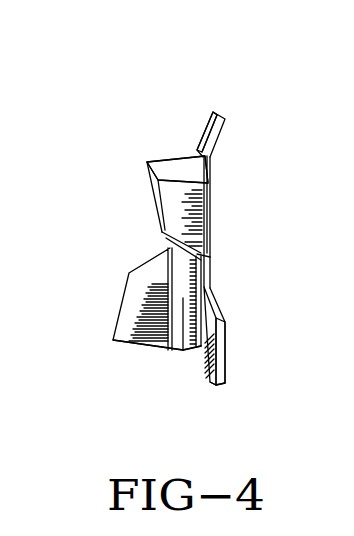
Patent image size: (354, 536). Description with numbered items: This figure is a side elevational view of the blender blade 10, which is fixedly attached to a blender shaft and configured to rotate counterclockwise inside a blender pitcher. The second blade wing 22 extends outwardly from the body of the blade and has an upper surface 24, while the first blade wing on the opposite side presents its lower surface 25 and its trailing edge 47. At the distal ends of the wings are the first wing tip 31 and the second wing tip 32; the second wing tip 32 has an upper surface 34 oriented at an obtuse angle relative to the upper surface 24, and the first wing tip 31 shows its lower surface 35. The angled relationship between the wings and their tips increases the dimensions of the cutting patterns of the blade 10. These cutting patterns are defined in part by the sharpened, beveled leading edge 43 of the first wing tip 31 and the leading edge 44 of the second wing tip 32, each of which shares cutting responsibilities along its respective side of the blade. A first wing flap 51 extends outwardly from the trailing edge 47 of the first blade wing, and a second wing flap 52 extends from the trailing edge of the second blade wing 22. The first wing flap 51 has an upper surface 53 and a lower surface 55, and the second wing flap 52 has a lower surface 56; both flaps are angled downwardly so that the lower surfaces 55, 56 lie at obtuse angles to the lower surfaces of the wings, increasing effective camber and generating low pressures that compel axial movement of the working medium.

The blender blade 10 is at (96, 146).
The leading edge of first wing tip 43 is at (165, 160).
The first wing tip 31 is at (147, 185).
The lower surface of first wing tip 35 is at (172, 204).
The lower surface of first blade wing 25 is at (210, 204).
The second wing flap 52 is at (231, 106).
The lower surface of second wing flap 56 is at (218, 143).
The trailing edge of first blade wing 47 is at (207, 272).
The second blade wing 22 is at (181, 304).
The upper surface of second wing tip 34 is at (128, 291).
The second wing tip 32 is at (125, 318).
The leading edge of second wing tip 44 is at (130, 348).
The upper surface of second blade wing 24 is at (191, 357).
The first wing flap 51 is at (232, 372).
The lower surface of first wing flap 55 is at (228, 333).
The upper surface of first wing flap 53 is at (208, 386).